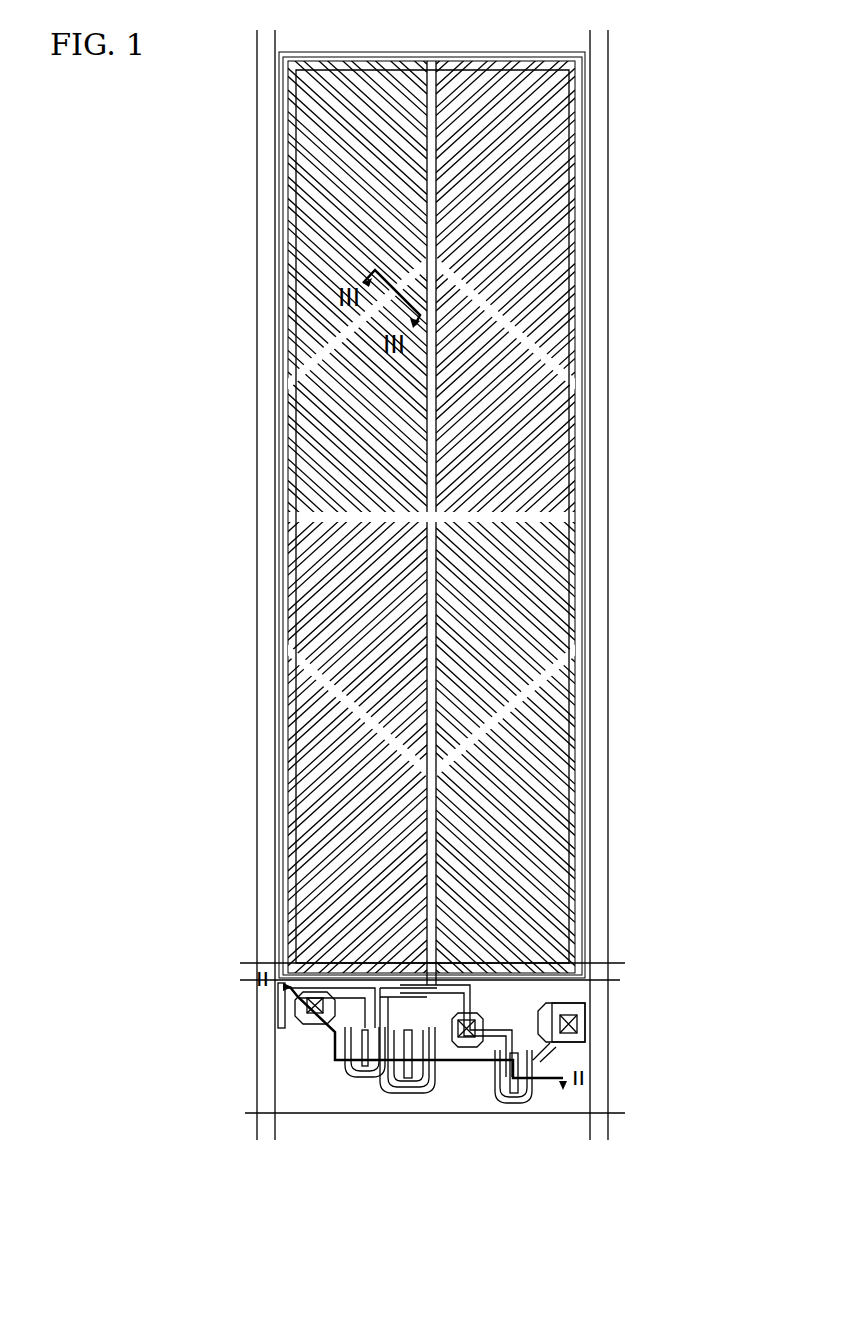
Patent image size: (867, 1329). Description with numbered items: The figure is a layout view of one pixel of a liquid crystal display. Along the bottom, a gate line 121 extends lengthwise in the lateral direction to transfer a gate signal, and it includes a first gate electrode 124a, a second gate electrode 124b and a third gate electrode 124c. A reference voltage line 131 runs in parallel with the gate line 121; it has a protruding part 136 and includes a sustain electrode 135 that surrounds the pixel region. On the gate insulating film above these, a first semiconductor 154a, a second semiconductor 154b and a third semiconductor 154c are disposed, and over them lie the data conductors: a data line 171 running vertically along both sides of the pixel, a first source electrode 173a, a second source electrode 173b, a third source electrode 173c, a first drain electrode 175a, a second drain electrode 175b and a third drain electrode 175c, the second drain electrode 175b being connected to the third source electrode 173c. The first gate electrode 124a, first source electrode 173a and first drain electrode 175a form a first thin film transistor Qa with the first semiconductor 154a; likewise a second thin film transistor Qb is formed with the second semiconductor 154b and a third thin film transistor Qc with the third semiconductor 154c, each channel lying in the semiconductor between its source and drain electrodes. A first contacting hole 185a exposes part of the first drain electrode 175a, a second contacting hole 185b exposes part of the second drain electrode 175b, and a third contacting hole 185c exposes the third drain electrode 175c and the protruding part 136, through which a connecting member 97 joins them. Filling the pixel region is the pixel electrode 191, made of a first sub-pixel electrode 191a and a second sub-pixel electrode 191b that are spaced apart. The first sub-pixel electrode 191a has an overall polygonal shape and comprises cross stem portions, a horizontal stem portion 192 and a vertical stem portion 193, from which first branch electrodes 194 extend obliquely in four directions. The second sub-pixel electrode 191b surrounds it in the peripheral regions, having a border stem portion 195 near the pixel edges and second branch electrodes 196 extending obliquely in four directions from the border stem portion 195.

The gate line 121 is at (248, 1113).
The first gate electrode 124a is at (330, 1040).
The second gate electrode 124b is at (420, 1082).
The third gate electrode 124c is at (565, 1085).
The reference voltage line 131 is at (600, 963).
The sustain electrode 135 is at (283, 182).
The protruding part 136 is at (585, 1010).
The first semiconductor 154a is at (335, 1060).
The second semiconductor 154b is at (455, 1082).
The third semiconductor 154c is at (520, 1078).
The data line 171 is at (272, 294).
The first source electrode 173a is at (300, 1085).
The second source electrode 173b is at (380, 1072).
The third source electrode 173c is at (555, 1055).
The first drain electrode 175a is at (290, 986).
The second drain electrode 175b is at (357, 1062).
The third drain electrode 175c is at (545, 1100).
The first contacting hole 185a is at (305, 1006).
The second contacting hole 185b is at (470, 1040).
The third contacting hole 185c is at (580, 1018).
The pixel electrode 191 is at (529, 548).
The first sub-pixel electrode 191a is at (506, 578).
The second sub-pixel electrode 191b is at (506, 318).
The horizontal stem portion 192 is at (475, 510).
The vertical stem portion 193 is at (440, 352).
The first branch electrodes 194 is at (535, 410).
The border stem portion 195 is at (580, 228).
The second branch electrodes 196 is at (533, 270).
The connecting member 97 is at (590, 980).
The first thin film transistor Qa is at (340, 1078).
The second thin film transistor Qb is at (418, 1095).
The third thin film transistor Qc is at (540, 1105).